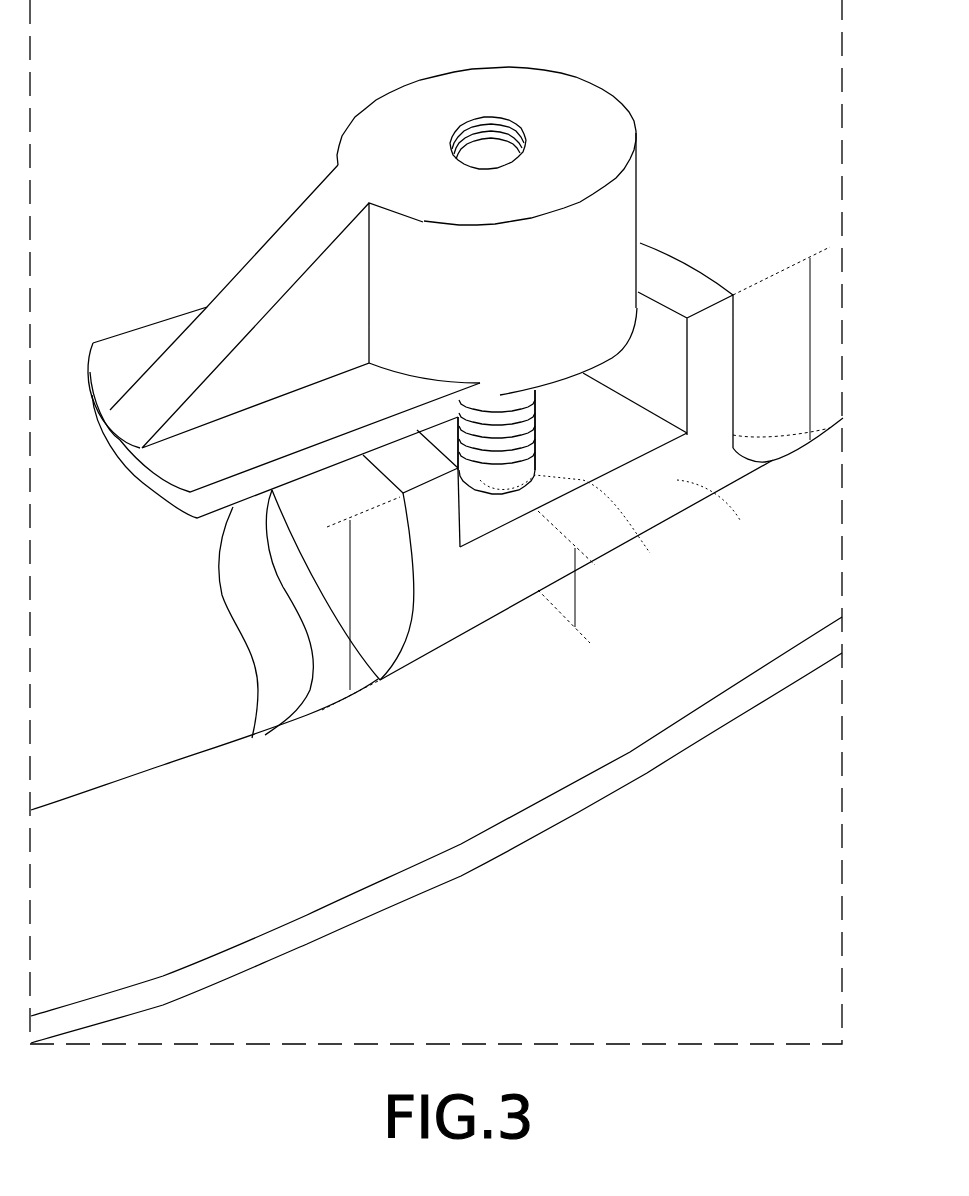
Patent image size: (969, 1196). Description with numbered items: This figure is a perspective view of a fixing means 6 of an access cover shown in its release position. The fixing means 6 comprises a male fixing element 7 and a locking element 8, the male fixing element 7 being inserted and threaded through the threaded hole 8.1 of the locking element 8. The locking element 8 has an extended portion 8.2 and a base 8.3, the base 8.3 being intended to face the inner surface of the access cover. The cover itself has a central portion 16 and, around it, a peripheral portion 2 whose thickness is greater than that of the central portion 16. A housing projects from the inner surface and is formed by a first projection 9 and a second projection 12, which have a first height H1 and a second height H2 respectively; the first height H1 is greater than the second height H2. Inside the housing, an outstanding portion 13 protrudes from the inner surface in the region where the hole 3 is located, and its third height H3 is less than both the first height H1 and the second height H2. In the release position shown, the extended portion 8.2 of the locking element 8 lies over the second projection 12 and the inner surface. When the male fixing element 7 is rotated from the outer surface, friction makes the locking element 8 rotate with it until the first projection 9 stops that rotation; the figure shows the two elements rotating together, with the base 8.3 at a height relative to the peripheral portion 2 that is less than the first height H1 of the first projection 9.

The peripheral portion 2 is at (520, 778).
The hole 3 is at (560, 520).
The fixing means 6 is at (238, 92).
The male fixing element 7 is at (540, 405).
The locking element 8 is at (633, 43).
The threaded hole 8.1 is at (483, 120).
The extended portion 8.2 is at (118, 360).
The base 8.3 is at (190, 548).
The first projection 9 is at (688, 290).
The second projection 12 is at (353, 490).
The outstanding portion 13 is at (675, 480).
The central portion 16 is at (117, 163).
The first height H1 is at (800, 343).
The second height H2 is at (364, 603).
The third height H3 is at (584, 577).